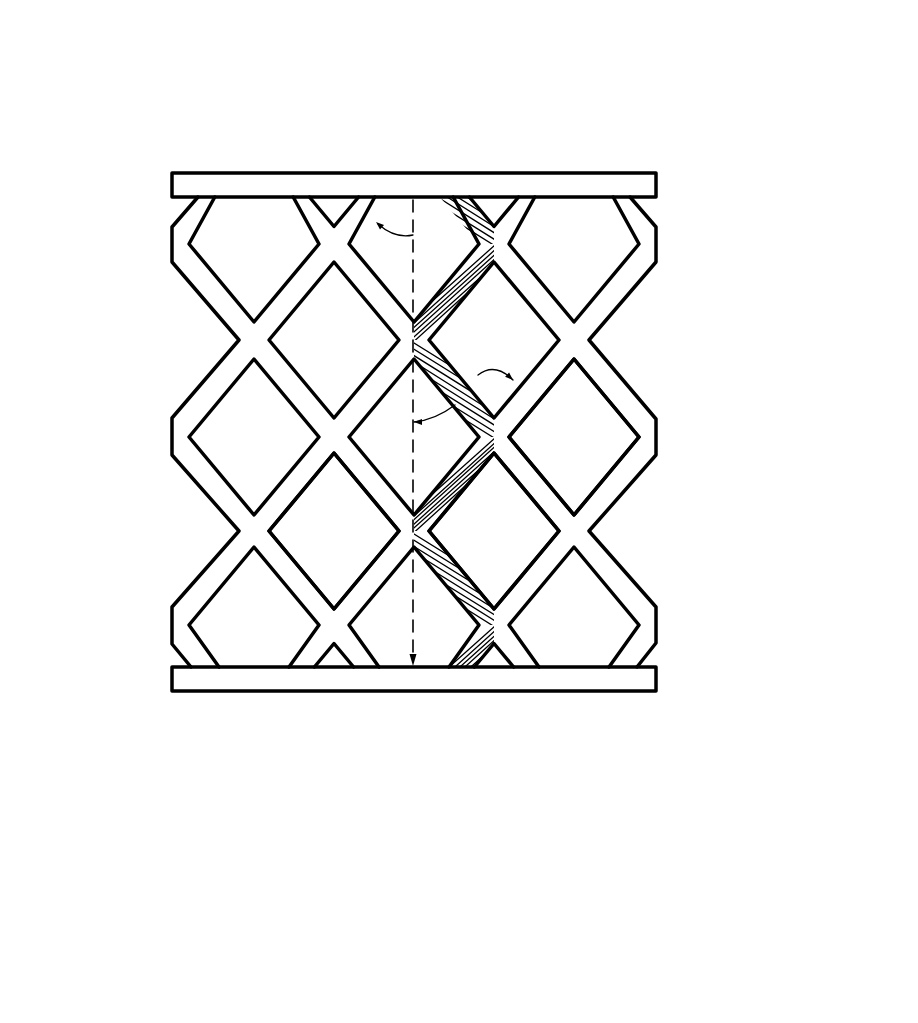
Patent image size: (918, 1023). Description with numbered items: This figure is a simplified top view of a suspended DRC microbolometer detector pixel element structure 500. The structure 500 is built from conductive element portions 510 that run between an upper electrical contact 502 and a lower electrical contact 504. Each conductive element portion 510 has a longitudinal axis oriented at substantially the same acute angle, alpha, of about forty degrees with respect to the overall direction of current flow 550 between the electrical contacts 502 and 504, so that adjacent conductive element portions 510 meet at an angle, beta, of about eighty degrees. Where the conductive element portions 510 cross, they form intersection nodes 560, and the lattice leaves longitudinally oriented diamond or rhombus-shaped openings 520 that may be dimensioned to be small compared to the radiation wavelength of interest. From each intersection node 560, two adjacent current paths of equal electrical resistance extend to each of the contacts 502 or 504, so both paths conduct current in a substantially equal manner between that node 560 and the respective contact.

The microbolometer detector pixel element structure 500 is at (686, 52).
The electrical contact 502 is at (590, 173).
The electrical contact 504 is at (590, 691).
The conductive element portions 510 is at (538, 292).
The openings / cells 520 is at (307, 524).
The overall direction of current flow 550 is at (413, 236).
The intersection node 560 is at (333, 435).